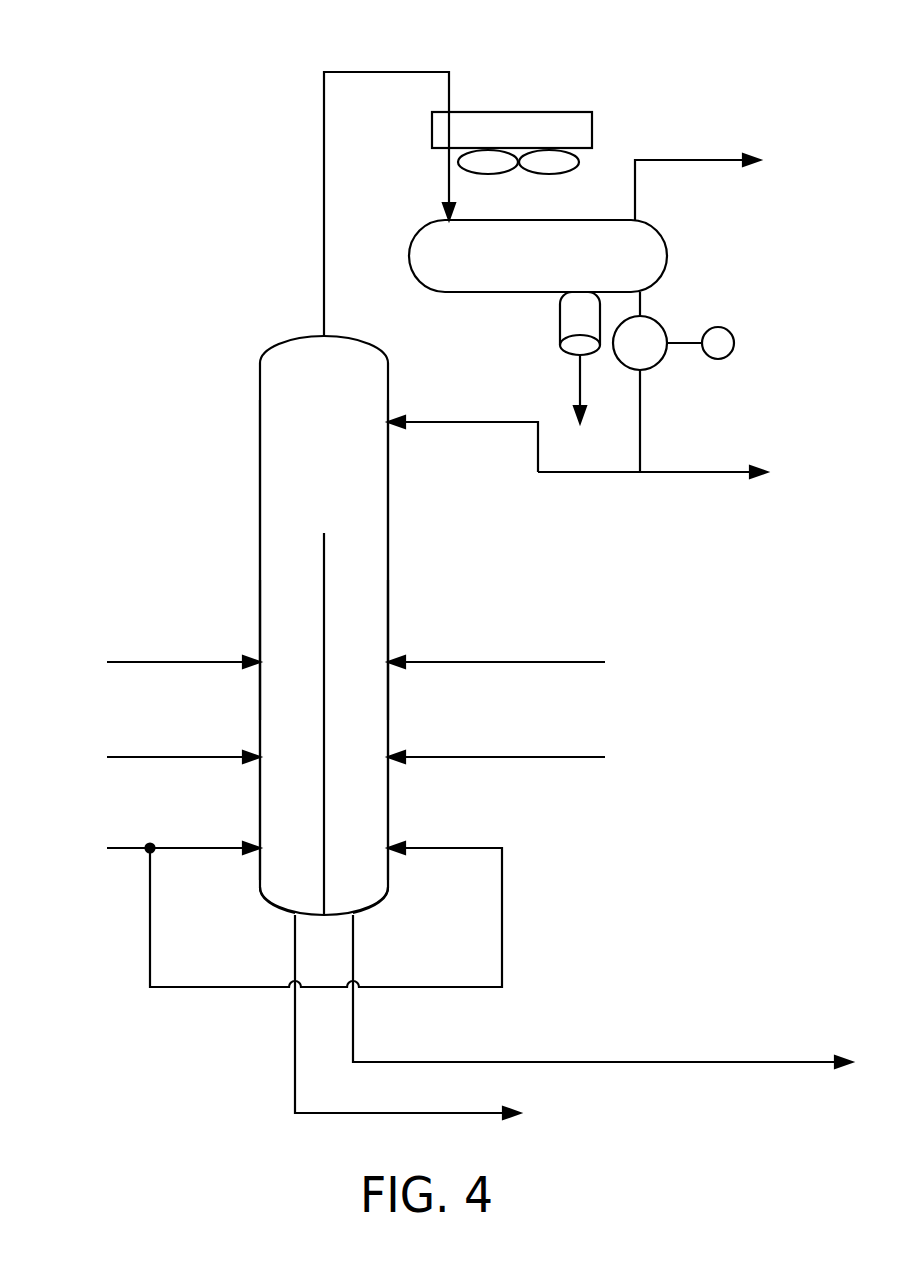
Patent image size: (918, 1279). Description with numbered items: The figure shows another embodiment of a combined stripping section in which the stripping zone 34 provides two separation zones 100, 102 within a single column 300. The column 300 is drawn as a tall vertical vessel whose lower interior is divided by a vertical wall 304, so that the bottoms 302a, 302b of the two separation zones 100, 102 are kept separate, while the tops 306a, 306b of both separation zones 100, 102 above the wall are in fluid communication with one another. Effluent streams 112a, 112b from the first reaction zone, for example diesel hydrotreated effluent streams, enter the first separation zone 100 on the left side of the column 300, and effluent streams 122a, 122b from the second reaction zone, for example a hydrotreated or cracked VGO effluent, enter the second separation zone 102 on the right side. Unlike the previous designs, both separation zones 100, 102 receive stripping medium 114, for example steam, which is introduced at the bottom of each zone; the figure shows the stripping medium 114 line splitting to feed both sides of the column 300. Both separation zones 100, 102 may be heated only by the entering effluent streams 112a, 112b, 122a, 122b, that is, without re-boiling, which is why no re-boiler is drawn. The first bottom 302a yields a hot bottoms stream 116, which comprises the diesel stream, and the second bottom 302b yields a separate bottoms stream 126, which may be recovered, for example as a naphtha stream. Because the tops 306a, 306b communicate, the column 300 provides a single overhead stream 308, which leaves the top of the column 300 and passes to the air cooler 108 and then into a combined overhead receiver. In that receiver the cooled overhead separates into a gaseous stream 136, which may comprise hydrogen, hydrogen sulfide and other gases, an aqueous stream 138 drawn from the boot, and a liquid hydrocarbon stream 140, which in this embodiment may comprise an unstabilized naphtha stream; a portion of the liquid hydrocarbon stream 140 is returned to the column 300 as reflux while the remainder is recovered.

The stripping zone 34 is at (757, 47).
The air cooler 108 is at (576, 112).
The gaseous stream 136 is at (707, 158).
The overhead stream 308 is at (324, 213).
The aqueous stream 138 is at (578, 380).
The liquid hydrocarbon stream 140 is at (641, 424).
The column 300 is at (270, 350).
The top of first separation zone 306a is at (291, 535).
The top of second separation zone 306b is at (348, 548).
The first separation zone 100 is at (283, 635).
The second separation zone 102 is at (360, 605).
The vertical wall 304 is at (327, 813).
The effluent stream from first reaction zone 112b is at (132, 660).
The effluent stream from first reaction zone 112a is at (132, 756).
The effluent stream from second reaction zone 122b is at (577, 662).
The effluent stream from second reaction zone 122a is at (577, 757).
The stripping medium 114 is at (132, 846).
The bottom of first separation zone 302a is at (292, 887).
The bottom of second separation zone 302b is at (370, 882).
The hot bottoms stream 116 is at (342, 1113).
The bottoms stream 126 is at (642, 1062).